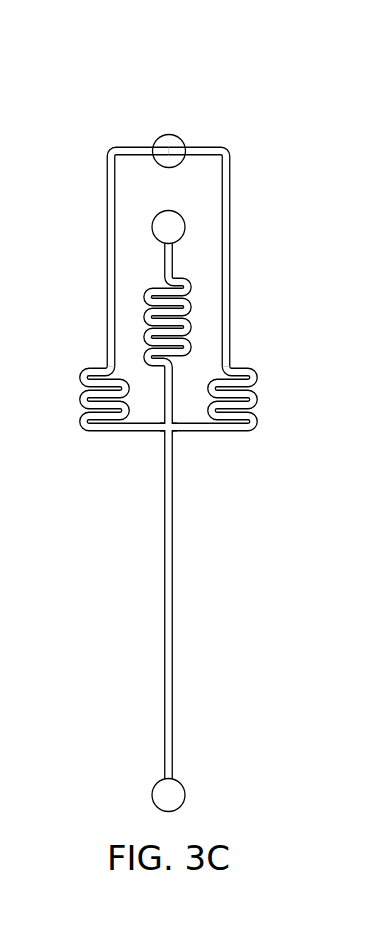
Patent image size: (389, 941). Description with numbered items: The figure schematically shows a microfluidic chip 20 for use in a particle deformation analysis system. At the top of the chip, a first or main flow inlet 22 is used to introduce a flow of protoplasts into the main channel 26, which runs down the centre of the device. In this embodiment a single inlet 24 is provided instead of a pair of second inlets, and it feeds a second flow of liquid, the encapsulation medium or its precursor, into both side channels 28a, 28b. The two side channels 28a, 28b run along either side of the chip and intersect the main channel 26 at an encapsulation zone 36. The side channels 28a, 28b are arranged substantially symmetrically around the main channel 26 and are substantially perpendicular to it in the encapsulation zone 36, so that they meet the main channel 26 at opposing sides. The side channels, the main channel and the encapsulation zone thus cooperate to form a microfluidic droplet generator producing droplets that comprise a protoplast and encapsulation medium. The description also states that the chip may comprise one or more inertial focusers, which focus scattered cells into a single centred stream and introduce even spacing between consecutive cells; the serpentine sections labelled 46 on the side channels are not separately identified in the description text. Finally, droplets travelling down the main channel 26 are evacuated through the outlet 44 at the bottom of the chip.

The microfluidic chip 20 is at (192, 99).
The first or main flow inlet 22 is at (152, 222).
The single inlet 24 is at (158, 139).
The main channel 26 is at (172, 630).
The side channel 28a is at (107, 297).
The side channel 28b is at (230, 282).
The encapsulation zone 36 is at (163, 436).
The outlet 44 is at (158, 782).
The serpentine channel section 46 is at (77, 439).